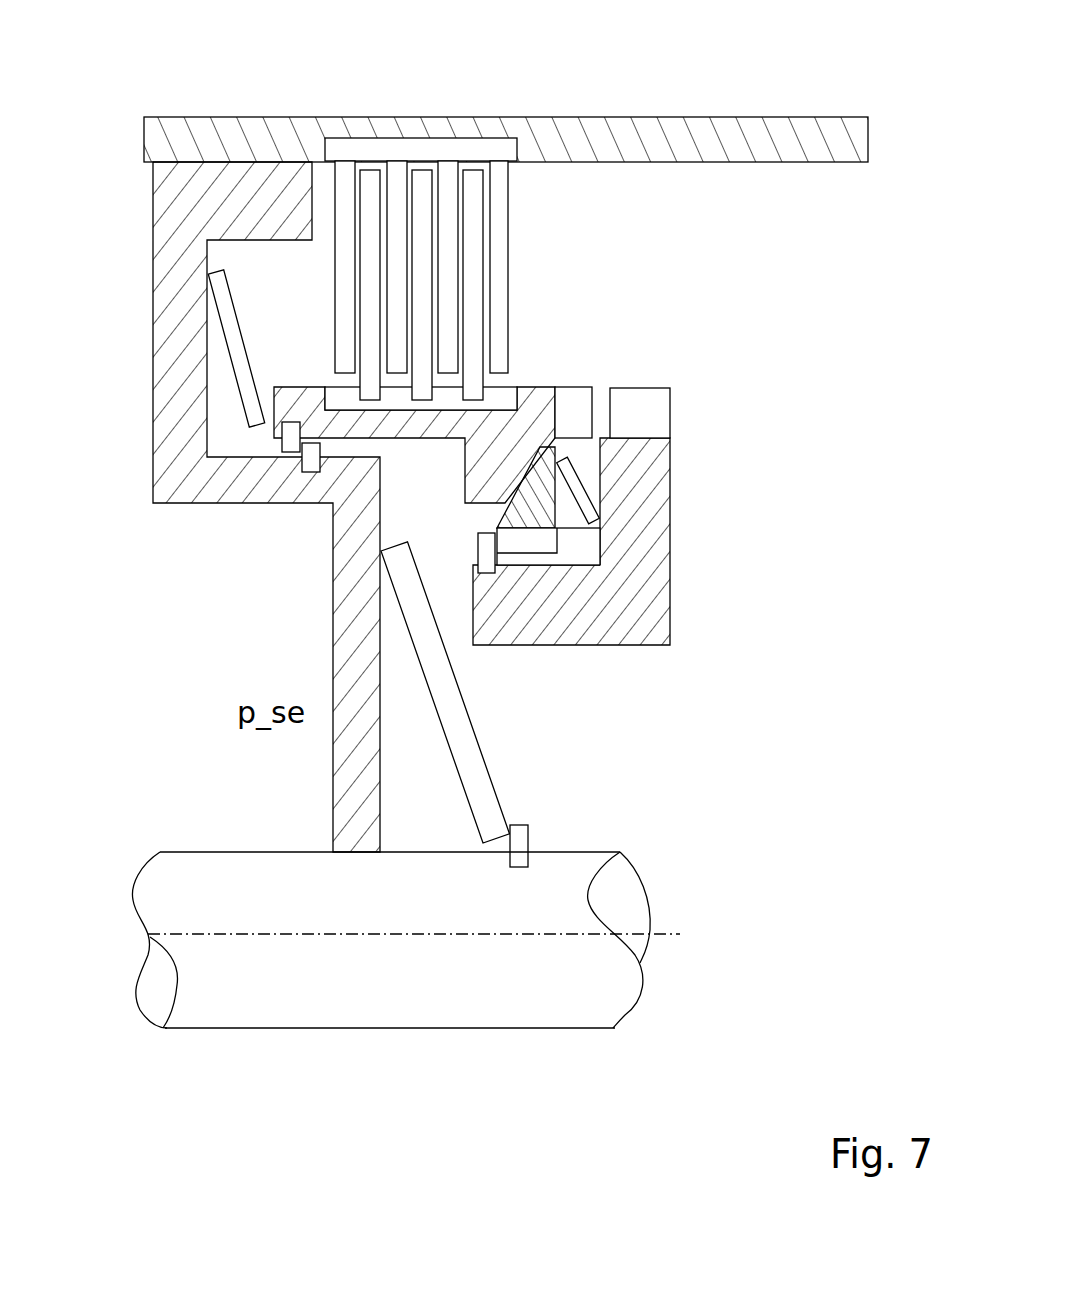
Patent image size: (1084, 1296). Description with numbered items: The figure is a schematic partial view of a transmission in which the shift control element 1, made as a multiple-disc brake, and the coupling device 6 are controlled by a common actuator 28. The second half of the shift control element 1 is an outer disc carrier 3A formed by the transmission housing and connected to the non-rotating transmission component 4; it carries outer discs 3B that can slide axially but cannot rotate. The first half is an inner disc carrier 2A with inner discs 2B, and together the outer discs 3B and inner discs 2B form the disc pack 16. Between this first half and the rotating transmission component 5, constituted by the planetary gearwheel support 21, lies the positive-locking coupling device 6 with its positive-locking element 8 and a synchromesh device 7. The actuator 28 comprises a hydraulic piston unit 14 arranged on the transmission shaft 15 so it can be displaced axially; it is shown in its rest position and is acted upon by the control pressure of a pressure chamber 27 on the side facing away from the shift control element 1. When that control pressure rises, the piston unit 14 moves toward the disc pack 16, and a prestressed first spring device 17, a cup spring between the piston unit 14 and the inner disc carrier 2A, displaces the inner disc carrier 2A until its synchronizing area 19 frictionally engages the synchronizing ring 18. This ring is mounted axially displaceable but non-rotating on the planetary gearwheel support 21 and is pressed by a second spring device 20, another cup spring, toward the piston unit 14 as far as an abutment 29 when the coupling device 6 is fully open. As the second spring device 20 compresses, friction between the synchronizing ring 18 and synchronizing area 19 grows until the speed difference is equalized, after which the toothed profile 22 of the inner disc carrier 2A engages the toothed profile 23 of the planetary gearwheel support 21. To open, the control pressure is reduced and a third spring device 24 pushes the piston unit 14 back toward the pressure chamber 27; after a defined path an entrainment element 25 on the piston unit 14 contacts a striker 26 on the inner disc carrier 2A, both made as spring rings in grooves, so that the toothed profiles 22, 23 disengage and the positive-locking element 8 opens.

The shift control element 1 is at (805, 297).
The inner disc carrier 2A is at (540, 397).
The inner discs 2B is at (370, 190).
The outer disc carrier 3A is at (688, 133).
The outer discs 3B is at (345, 200).
The non-rotating transmission component 4 is at (590, 103).
The rotating transmission component 5 is at (685, 480).
The coupling device 6 is at (630, 373).
The synchromesh device 7 is at (475, 525).
The positive-locking element 8 is at (700, 368).
The hydraulic piston unit 14 is at (177, 443).
The transmission shaft 15 is at (367, 997).
The disc pack 16 is at (432, 140).
The first spring device 17 is at (237, 347).
The synchronizing ring 18 is at (490, 557).
The synchronizing area 19 is at (503, 467).
The second spring device 20 is at (600, 507).
The planetary gearwheel support 21 is at (623, 600).
The toothed profile 22 is at (573, 403).
The toothed profile 23 is at (653, 412).
The third spring device 24 is at (487, 817).
The entrainment element 25 is at (310, 465).
The striker 26 is at (282, 438).
The pressure chamber 27 is at (180, 729).
The actuator 28 is at (146, 191).
The abutment 29 is at (533, 515).